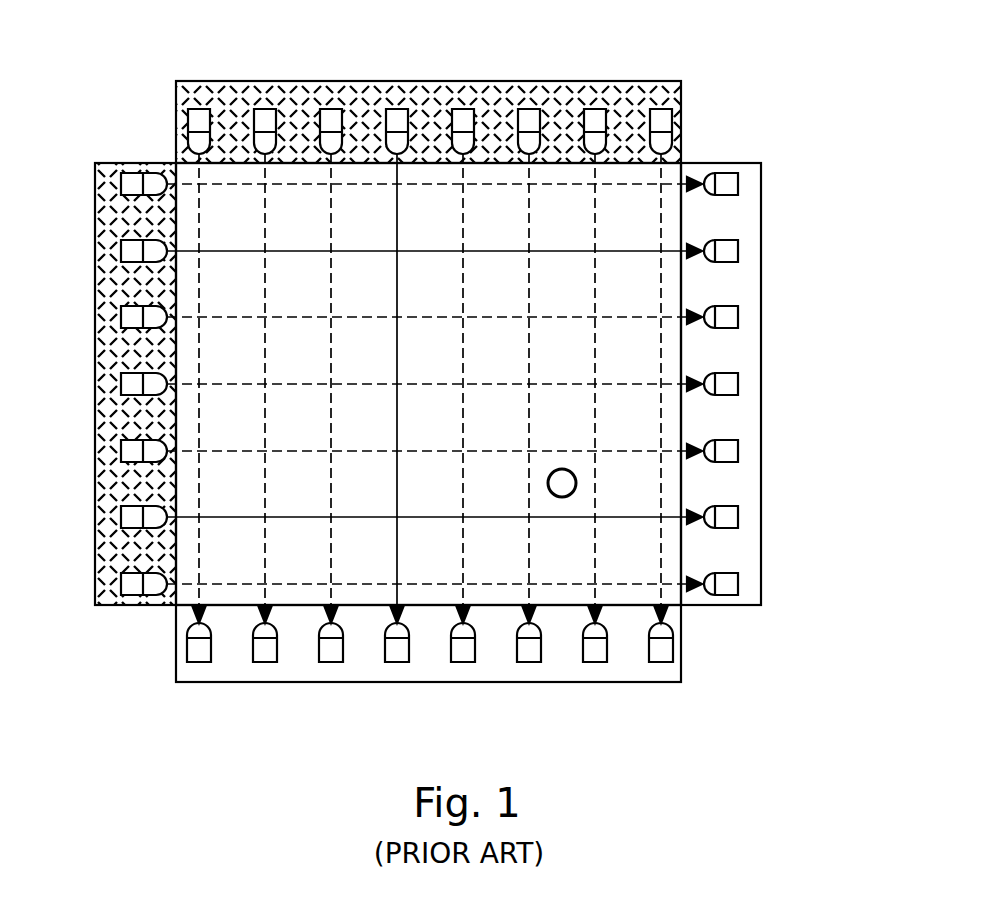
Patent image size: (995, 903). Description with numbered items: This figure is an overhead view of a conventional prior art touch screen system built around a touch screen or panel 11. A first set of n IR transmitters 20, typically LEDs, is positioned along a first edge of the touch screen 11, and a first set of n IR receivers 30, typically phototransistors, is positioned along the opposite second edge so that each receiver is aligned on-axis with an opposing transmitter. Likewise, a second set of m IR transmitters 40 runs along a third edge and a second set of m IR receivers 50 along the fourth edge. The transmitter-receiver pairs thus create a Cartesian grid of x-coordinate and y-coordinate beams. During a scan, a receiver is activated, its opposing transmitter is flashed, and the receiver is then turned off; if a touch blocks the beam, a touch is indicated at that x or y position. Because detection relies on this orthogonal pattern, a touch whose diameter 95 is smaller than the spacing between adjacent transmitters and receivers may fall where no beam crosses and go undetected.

The touch screen 11 is at (555, 218).
The touch diameter 95 is at (565, 489).
The IR transmitters 20 is at (435, 86).
The IR receivers 30 is at (435, 676).
The IR transmitters 40 is at (83, 384).
The IR receivers 50 is at (774, 384).